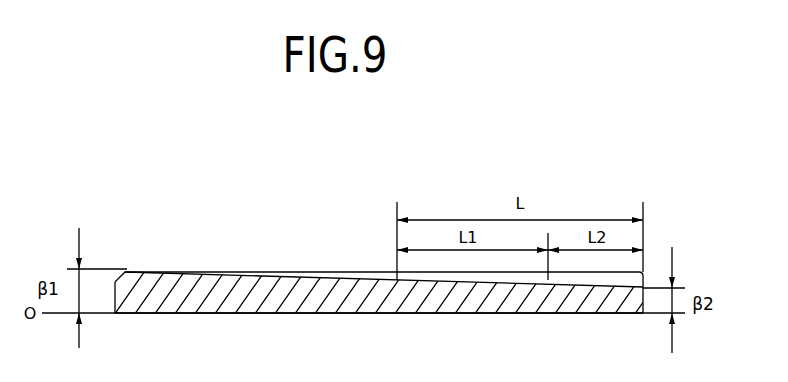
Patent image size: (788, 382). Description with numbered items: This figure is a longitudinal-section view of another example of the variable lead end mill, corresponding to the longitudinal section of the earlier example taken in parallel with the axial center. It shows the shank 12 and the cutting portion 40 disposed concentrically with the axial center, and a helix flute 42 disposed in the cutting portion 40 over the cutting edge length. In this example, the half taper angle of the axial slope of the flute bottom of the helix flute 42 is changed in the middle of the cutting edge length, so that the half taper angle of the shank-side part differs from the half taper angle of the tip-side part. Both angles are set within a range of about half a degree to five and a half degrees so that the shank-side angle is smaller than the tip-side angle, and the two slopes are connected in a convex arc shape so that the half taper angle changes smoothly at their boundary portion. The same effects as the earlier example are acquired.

The shank 12 is at (218, 290).
The cutting portion 40 is at (623, 184).
The helix flute 42 is at (492, 281).